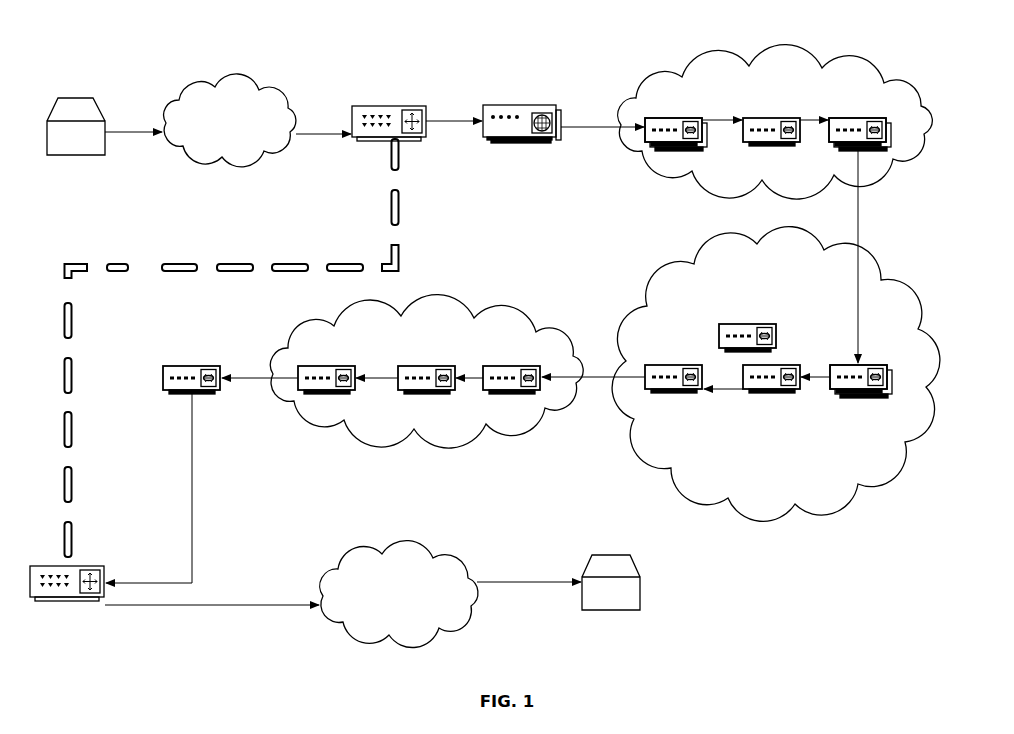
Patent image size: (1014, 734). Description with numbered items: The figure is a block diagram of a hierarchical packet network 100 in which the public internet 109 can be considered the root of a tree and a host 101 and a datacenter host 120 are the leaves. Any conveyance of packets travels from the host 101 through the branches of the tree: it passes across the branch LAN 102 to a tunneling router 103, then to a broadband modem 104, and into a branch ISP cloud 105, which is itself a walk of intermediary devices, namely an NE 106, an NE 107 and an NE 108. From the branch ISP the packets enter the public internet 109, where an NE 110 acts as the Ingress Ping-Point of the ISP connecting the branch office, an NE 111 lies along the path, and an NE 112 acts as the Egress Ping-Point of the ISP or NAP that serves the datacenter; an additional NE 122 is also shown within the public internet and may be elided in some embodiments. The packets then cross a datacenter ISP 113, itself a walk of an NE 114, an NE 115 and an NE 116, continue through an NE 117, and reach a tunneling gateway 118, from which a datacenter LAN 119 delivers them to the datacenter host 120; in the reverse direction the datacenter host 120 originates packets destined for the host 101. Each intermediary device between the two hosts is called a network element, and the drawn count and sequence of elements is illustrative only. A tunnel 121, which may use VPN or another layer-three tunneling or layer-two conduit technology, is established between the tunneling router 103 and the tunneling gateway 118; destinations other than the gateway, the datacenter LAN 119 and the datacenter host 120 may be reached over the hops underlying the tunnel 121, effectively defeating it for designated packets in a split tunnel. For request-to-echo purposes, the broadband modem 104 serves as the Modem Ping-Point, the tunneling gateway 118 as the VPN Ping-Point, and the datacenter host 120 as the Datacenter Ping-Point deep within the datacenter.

The packet network 100 is at (723, 515).
The host 101 is at (76, 142).
The branch LAN 102 is at (230, 120).
The tunneling router 103 is at (388, 95).
The broadband modem 104 is at (524, 87).
The branch ISP cloud 105 is at (775, 122).
The network element 106 is at (674, 147).
The network element 107 is at (773, 146).
The network element 108 is at (859, 151).
The public internet 109 is at (776, 374).
The network element 110 is at (859, 401).
The network element 111 is at (770, 401).
The network element 112 is at (672, 401).
The datacenter ISP 113 is at (426, 371).
The network element 114 is at (513, 401).
The network element 115 is at (428, 401).
The network element 116 is at (328, 401).
The network element 117 is at (192, 401).
The tunneling gateway 118 is at (68, 621).
The datacenter LAN 119 is at (399, 594).
The datacenter host 120 is at (612, 612).
The tunnel 121 is at (232, 348).
The network element 122 is at (720, 323).